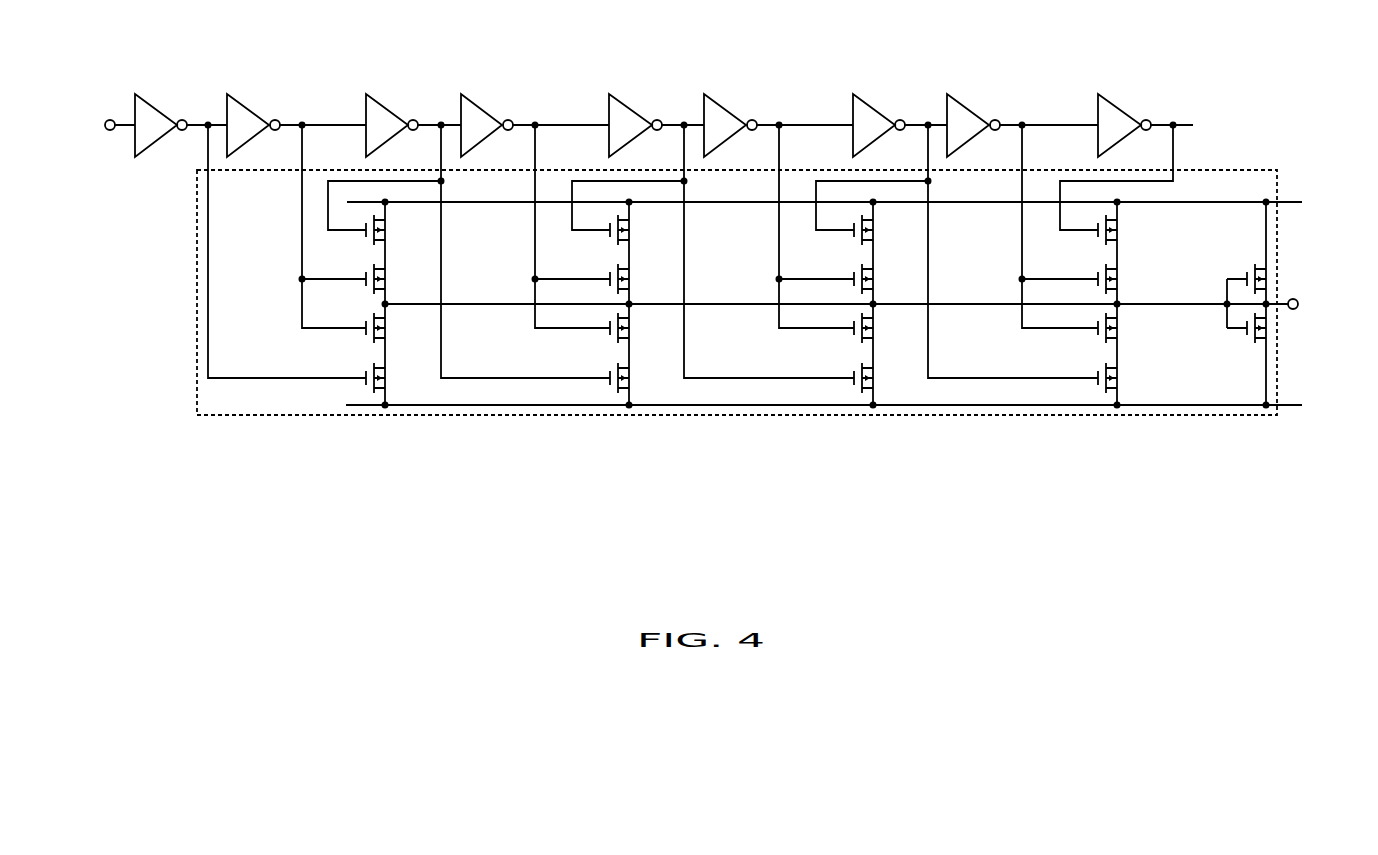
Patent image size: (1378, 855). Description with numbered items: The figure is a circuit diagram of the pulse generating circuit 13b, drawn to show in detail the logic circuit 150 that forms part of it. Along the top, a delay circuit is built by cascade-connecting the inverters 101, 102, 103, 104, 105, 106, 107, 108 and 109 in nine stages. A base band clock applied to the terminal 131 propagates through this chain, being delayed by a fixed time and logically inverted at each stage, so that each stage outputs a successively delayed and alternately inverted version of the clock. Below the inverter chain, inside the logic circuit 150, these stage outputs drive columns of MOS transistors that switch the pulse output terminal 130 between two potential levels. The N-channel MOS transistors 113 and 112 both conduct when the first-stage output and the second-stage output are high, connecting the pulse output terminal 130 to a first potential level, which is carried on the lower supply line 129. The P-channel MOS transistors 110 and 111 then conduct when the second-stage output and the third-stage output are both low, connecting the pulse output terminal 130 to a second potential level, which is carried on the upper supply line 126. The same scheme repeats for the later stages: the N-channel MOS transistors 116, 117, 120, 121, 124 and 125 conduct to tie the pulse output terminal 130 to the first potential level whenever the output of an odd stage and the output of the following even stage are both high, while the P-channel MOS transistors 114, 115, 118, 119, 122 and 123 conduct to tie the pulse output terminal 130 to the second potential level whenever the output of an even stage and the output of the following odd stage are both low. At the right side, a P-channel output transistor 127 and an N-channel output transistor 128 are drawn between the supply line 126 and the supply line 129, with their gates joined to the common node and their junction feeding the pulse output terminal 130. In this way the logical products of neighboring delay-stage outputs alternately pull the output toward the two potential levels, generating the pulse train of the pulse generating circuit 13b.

The pulse generating circuit 13b is at (580, 64).
The inverter 101 is at (148, 96).
The inverter 102 is at (239, 95).
The inverter 103 is at (379, 96).
The inverter 104 is at (474, 96).
The inverter 105 is at (622, 96).
The inverter 106 is at (717, 96).
The inverter 107 is at (866, 96).
The inverter 108 is at (960, 96).
The inverter 109 is at (1111, 96).
The P-channel MOS transistor 110 is at (388, 232).
The P-channel MOS transistor 111 is at (373, 267).
The N-channel MOS transistor 112 is at (373, 316).
The N-channel MOS transistor 113 is at (373, 366).
The P-channel MOS transistor 114 is at (632, 232).
The P-channel MOS transistor 115 is at (617, 267).
The N-channel MOS transistor 116 is at (632, 330).
The N-channel MOS transistor 117 is at (617, 366).
The P-channel MOS transistor 118 is at (876, 232).
The P-channel MOS transistor 119 is at (861, 267).
The N-channel MOS transistor 120 is at (876, 330).
The N-channel MOS transistor 121 is at (861, 366).
The P-channel MOS transistor 122 is at (1120, 232).
The P-channel MOS transistor 123 is at (1105, 267).
The N-channel MOS transistor 124 is at (1120, 330).
The N-channel MOS transistor 125 is at (1105, 366).
The high-potential power supply line V2 126 is at (1286, 198).
The P-channel output transistor 127 is at (1259, 281).
The N-channel output transistor 128 is at (1259, 330).
The low-potential power supply line V1 129 is at (1286, 410).
The pulse output terminal 130 is at (1298, 304).
The terminal 131 is at (105, 125).
The logic circuit 150 is at (196, 224).